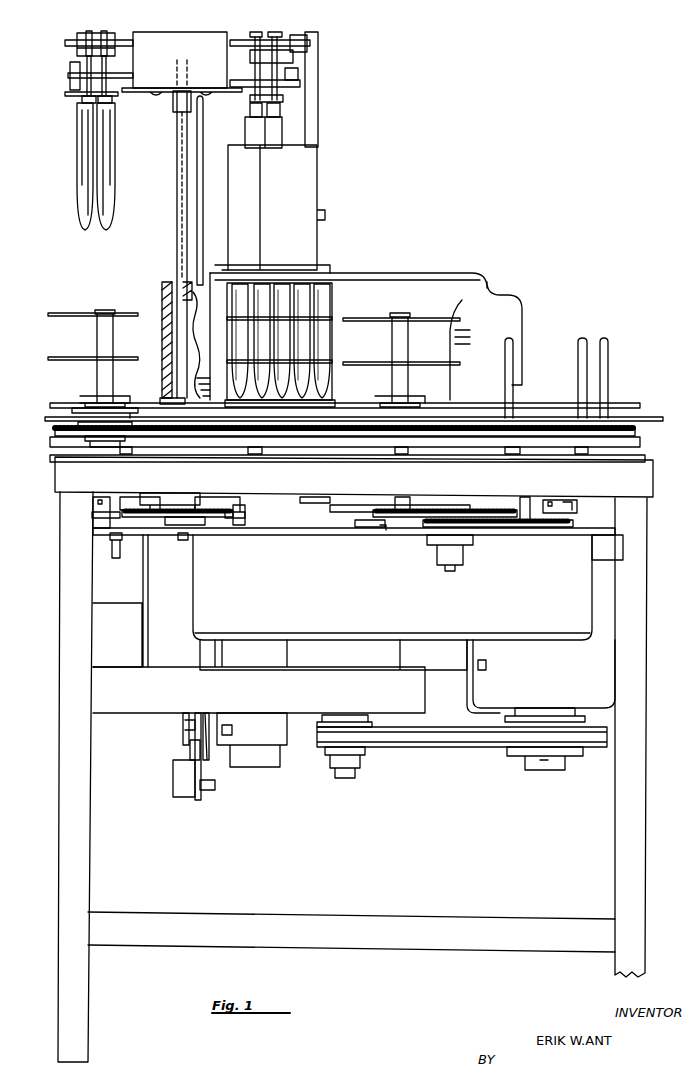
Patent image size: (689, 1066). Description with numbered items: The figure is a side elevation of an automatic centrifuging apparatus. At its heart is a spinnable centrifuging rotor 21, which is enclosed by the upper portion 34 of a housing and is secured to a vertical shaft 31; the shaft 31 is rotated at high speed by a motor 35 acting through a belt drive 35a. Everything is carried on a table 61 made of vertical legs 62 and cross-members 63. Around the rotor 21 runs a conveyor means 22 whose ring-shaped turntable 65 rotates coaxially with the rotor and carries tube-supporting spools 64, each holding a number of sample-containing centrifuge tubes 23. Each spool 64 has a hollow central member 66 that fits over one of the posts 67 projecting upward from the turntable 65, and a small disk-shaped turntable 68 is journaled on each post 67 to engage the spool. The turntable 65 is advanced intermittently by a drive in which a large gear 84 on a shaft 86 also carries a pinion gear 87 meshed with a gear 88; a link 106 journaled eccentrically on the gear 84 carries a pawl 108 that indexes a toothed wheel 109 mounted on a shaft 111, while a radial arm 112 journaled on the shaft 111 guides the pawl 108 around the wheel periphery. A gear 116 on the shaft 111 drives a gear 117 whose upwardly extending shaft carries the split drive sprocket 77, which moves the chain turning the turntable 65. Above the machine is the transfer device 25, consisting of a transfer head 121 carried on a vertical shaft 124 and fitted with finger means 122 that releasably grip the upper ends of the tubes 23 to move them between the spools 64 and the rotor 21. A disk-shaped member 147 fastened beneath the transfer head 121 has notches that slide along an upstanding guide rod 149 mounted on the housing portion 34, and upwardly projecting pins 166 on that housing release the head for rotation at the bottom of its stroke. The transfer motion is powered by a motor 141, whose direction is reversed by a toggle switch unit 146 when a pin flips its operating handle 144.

The centrifuging rotor 21 is at (524, 292).
The conveyor means 22 is at (44, 424).
The centrifuge tubes 23 is at (90, 146).
The transfer device 25 is at (156, 21).
The shaft 31 is at (345, 776).
The upper housing portion 34 is at (526, 322).
The motor 35 is at (354, 628).
The belt drive 35a is at (430, 737).
The table 61 is at (649, 583).
The vertical legs 62 is at (60, 735).
The cross-members 63 is at (62, 478).
The tube-supporting spools 64 is at (70, 348).
The ring-shaped turntable 65 is at (322, 455).
The hollow central member 66 is at (113, 322).
The posts 67 is at (513, 356).
The disk-shaped turntable 68 is at (636, 417).
The sprocket 77 is at (120, 440).
The gear 84 is at (408, 502).
The shaft 86 is at (448, 565).
The pinion gear 87 is at (430, 528).
The gear 88 is at (500, 527).
The link 106 is at (348, 492).
The pawl 108 is at (160, 478).
The toothed wheel 109 is at (214, 498).
The shaft 111 is at (184, 540).
The radial arm 112 is at (176, 494).
The gear 116 is at (220, 518).
The gear 117 is at (92, 513).
The transfer head 121 is at (212, 32).
The finger means 122 is at (74, 101).
The vertical shaft 124 is at (176, 205).
The motor 141 is at (256, 764).
The operating handle 144 is at (188, 747).
The toggle switch unit 146 is at (175, 780).
The disk-shaped member 147 is at (140, 90).
The guide rod 149 is at (197, 157).
The pins 166 is at (176, 265).